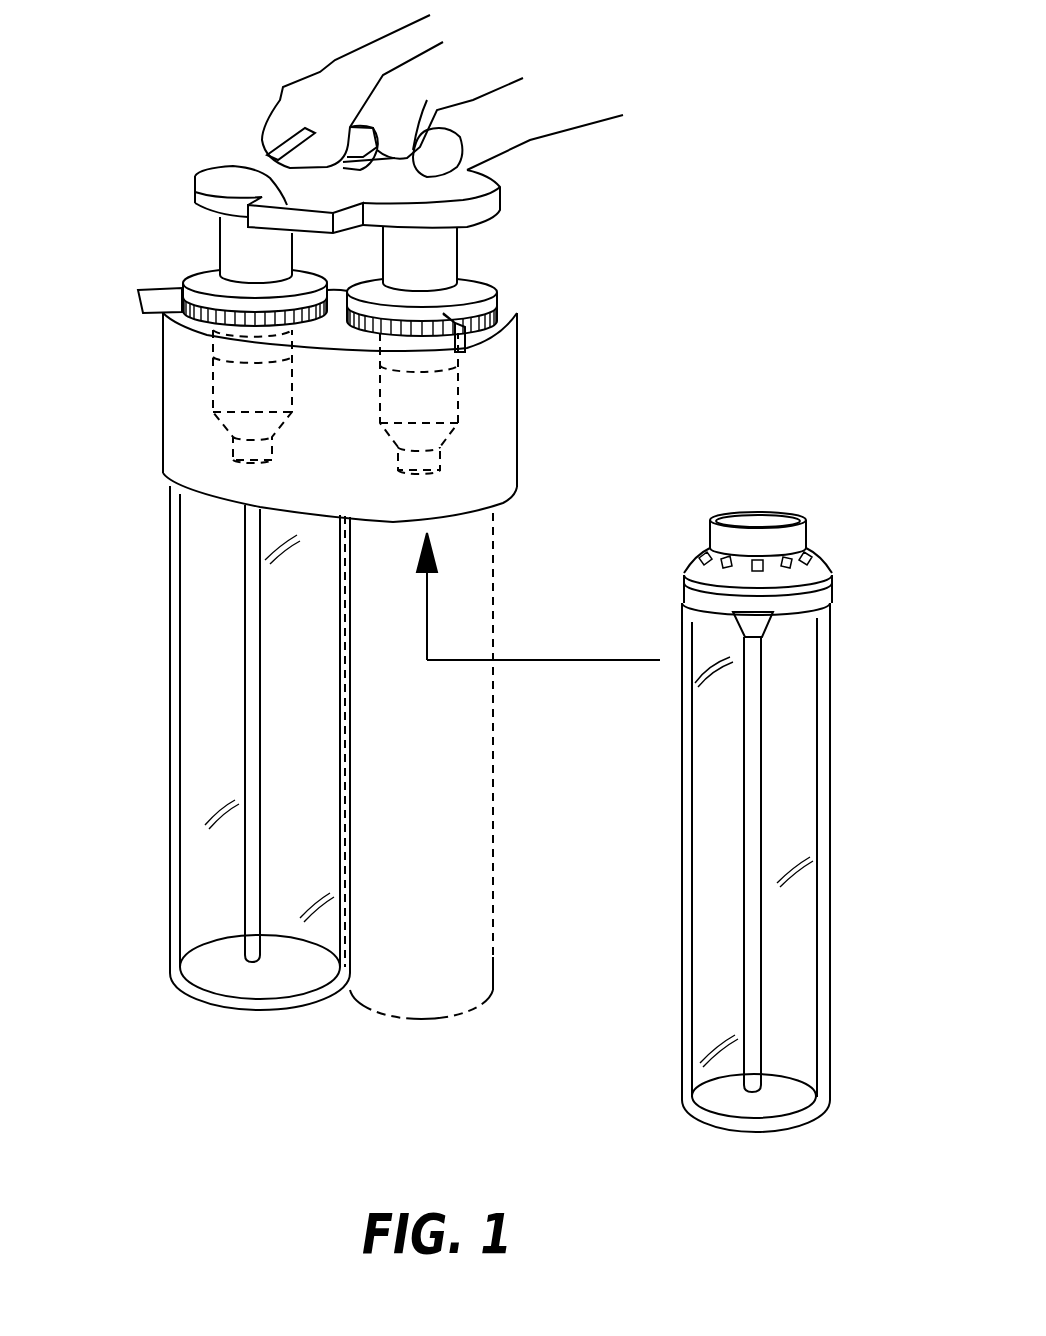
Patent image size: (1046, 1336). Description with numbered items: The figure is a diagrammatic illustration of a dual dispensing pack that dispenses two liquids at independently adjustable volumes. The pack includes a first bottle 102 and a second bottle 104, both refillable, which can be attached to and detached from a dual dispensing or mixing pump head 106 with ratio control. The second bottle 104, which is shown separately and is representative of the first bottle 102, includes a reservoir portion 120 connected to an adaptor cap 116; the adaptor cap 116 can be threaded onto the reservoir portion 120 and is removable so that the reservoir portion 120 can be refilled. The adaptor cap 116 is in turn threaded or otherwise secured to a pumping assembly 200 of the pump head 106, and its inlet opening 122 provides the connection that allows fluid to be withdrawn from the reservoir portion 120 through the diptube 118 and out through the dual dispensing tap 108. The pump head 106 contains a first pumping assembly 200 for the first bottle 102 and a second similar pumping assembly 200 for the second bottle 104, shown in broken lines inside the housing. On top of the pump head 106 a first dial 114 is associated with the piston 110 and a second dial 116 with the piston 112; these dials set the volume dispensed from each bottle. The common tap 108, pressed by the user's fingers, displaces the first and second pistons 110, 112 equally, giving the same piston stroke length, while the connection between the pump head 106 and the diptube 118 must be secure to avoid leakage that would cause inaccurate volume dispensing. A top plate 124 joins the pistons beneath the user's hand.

The first bottle 102 is at (172, 678).
The second bottle 104 is at (799, 784).
The dual dispensing pump head 106 is at (517, 445).
The dual dispensing tap 108 is at (240, 166).
The piston 110 is at (227, 231).
The piston 112 is at (452, 248).
The first dial 114 is at (200, 276).
The adaptor cap 116 is at (487, 290).
The diptube 118 is at (762, 693).
The reservoir portion 120 is at (827, 848).
The inlet opening 122 is at (788, 510).
The press plate 124 is at (488, 187).
The pumping assembly 200 is at (210, 387).